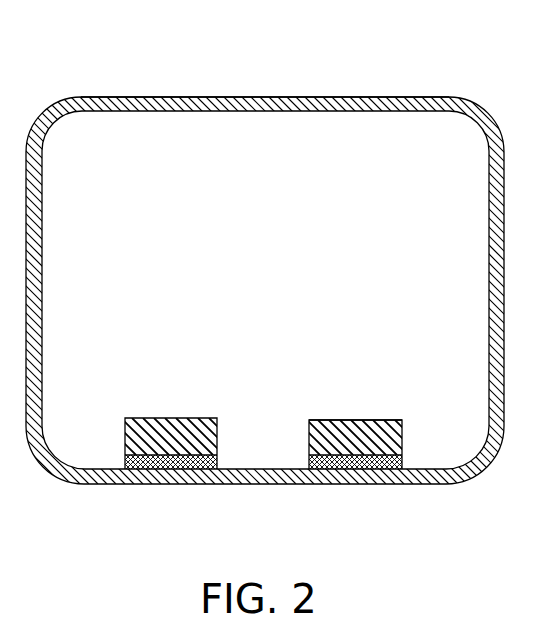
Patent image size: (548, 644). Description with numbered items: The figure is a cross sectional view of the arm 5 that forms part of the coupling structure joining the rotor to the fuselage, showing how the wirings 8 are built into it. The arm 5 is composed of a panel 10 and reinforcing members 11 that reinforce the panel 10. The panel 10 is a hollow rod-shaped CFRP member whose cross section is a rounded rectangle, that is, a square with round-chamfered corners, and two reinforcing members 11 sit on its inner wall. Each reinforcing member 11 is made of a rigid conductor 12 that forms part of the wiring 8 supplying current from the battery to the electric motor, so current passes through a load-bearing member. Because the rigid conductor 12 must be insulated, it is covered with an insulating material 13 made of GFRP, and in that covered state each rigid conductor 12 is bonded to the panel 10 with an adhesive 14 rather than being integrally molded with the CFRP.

The arm 5 is at (403, 99).
The panel 10 is at (197, 97).
The reinforcing member 11 is at (201, 418).
The wiring 8 is at (352, 412).
The rigid conductor 12 is at (398, 420).
The insulating material 13 is at (336, 420).
The adhesive 14 is at (309, 455).